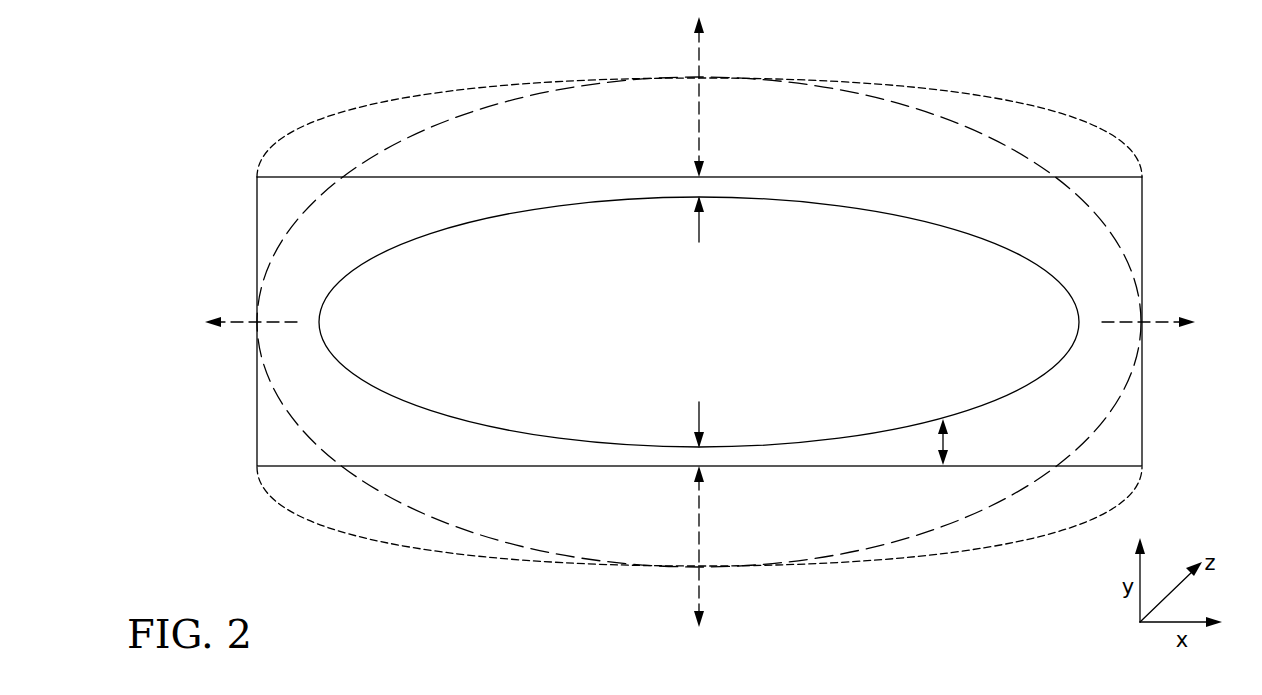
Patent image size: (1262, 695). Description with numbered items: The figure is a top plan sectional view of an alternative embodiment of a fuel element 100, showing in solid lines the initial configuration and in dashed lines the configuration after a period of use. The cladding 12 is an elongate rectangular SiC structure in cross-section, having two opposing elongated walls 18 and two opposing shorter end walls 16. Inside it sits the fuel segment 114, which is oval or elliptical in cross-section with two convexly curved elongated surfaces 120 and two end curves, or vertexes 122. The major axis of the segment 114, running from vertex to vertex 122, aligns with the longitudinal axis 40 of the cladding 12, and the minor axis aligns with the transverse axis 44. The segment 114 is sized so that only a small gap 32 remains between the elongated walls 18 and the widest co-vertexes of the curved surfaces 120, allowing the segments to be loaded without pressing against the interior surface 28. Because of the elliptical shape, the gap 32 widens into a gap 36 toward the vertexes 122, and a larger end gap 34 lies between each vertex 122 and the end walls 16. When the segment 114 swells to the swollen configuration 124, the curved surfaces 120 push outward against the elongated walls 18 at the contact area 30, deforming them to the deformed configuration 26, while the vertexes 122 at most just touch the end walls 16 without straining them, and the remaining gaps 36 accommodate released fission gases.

The fuel element 100 is at (292, 84).
The cladding 12 is at (697, 176).
The end walls 16 is at (255, 243).
The elongated walls 18 is at (868, 175).
The deformed configuration 26 is at (1070, 120).
The interior surface 28 is at (957, 178).
The contact area 30 is at (720, 77).
The small gap 32 is at (697, 187).
The end gaps 34 is at (270, 340).
The gap 36 is at (272, 190).
The longitudinal axis 40 is at (699, 322).
The transverse axis 44 is at (697, 334).
The fuel segment 114 is at (995, 403).
The convexly curved elongated surfaces 120 is at (1030, 260).
The vertexes 122 is at (319, 322).
The swollen configuration 124 is at (503, 103).